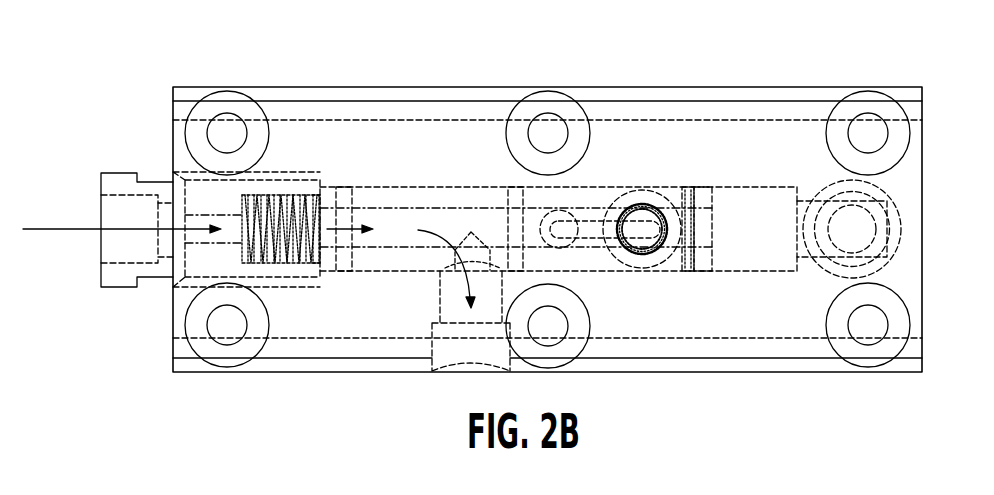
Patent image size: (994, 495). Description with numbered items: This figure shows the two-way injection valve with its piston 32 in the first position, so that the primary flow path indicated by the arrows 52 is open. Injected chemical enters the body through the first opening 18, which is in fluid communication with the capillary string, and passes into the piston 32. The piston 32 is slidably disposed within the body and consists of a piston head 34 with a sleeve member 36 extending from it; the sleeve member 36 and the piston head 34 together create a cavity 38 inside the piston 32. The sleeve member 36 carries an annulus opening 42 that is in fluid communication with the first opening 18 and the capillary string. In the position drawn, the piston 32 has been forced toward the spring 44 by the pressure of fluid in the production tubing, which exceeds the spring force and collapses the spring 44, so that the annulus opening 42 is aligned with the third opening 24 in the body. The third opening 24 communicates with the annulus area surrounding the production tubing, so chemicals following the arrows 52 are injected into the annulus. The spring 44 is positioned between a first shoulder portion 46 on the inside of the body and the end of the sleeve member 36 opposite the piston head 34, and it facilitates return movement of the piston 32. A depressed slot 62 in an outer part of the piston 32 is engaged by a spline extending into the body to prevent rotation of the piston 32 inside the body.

The first opening 18 is at (114, 197).
The third opening 24 is at (462, 305).
The piston 32 is at (425, 202).
The piston head 34 is at (713, 208).
The sleeve member 36 is at (582, 255).
The cavity 38 is at (407, 244).
The annulus opening 42 is at (472, 232).
The spring 44 is at (305, 200).
The first shoulder portion 46 is at (262, 200).
The arrows 52 is at (140, 228).
The depressed slot 62 is at (590, 222).